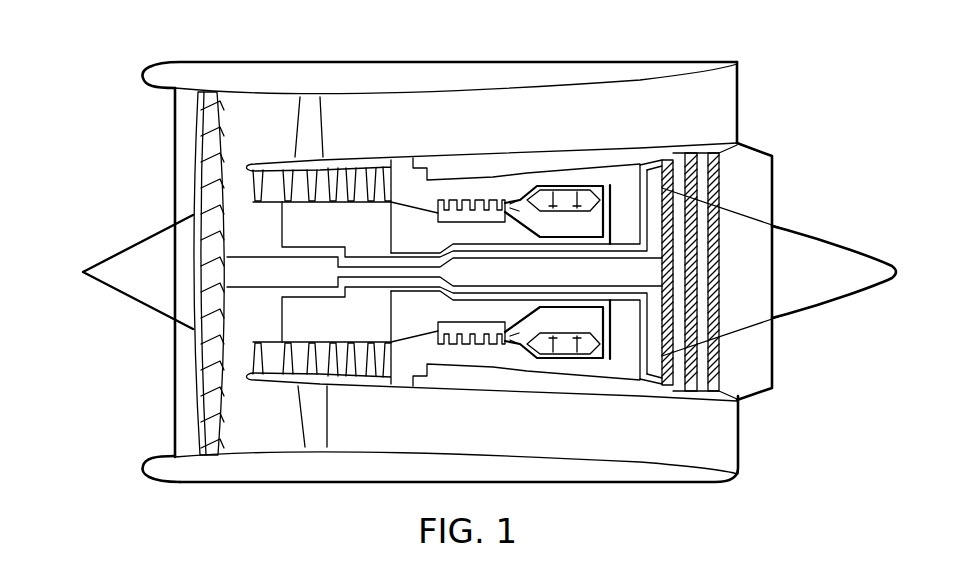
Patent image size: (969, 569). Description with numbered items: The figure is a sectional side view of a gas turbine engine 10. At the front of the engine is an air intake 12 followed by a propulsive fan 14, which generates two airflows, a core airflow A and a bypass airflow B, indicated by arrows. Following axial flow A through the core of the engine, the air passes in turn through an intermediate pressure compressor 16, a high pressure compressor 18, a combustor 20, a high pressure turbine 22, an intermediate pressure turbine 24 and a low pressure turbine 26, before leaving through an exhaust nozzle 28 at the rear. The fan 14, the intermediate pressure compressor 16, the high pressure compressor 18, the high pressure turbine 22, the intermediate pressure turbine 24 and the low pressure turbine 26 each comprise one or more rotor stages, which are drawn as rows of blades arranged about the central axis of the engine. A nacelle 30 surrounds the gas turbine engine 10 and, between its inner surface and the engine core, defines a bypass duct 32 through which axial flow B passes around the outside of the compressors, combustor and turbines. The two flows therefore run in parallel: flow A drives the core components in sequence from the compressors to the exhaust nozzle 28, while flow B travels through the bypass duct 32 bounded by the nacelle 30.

The gas turbine engine 10 is at (124, 58).
The air intake 12 is at (183, 125).
The propulsive fan 14 is at (203, 90).
The intermediate pressure compressor 16 is at (337, 218).
The high pressure compressor 18 is at (463, 202).
The combustor 20 is at (560, 196).
The high pressure turbine 22 is at (602, 193).
The intermediate pressure turbine 24 is at (647, 187).
The low pressure turbine 26 is at (722, 165).
The exhaust nozzle 28 is at (742, 177).
The nacelle 30 is at (308, 91).
The bypass duct 32 is at (472, 125).
The airflow A is at (237, 185).
The airflow B is at (240, 138).